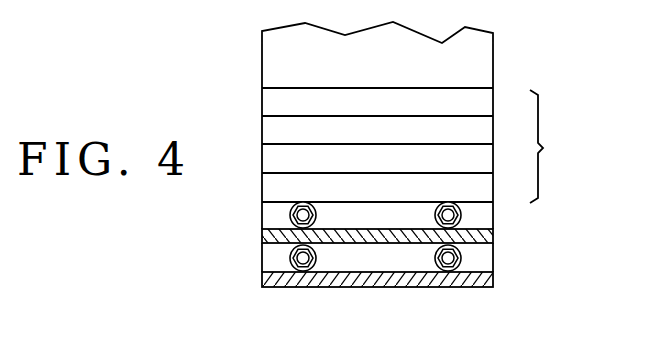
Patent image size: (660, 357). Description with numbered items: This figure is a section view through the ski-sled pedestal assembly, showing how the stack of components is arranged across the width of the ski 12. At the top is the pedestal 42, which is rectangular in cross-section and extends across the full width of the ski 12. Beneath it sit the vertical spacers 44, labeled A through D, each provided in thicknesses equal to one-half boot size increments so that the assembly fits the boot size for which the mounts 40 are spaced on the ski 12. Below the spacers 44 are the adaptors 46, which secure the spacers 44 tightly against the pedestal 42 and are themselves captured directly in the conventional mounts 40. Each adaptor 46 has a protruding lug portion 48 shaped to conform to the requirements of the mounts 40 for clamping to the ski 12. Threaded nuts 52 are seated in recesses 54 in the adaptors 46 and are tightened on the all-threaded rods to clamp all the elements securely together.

The ski 12 is at (382, 287).
The mounts 40 is at (483, 234).
The pedestal 42 is at (493, 50).
The vertical spacers 44 is at (543, 148).
The adaptors 46 is at (493, 213).
The lug portion 48 is at (480, 258).
The threaded nuts 52 is at (316, 212).
The recesses 54 is at (290, 223).